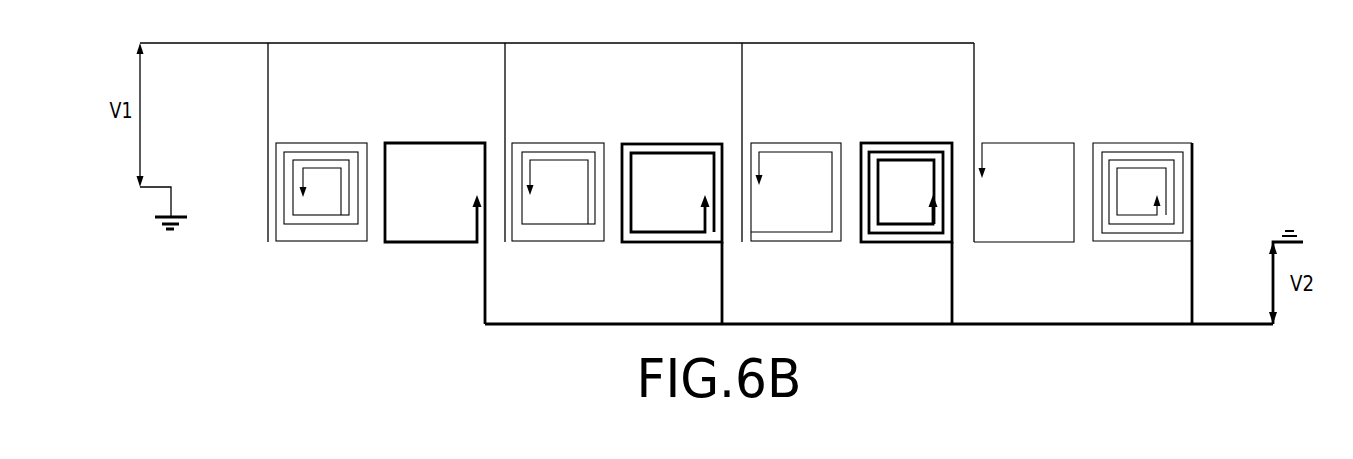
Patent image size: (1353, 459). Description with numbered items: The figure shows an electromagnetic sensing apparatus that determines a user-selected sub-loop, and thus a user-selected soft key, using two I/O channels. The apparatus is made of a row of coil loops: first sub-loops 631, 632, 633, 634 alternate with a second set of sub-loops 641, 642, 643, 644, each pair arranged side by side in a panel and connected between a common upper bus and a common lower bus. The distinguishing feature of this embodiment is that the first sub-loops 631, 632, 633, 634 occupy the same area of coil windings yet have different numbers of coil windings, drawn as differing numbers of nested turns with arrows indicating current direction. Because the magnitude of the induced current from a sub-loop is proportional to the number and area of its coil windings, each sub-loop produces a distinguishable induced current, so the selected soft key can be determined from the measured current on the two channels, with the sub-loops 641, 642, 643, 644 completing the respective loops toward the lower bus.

The first sub-loop 631 is at (320, 143).
The first sub-loop 632 is at (558, 143).
The first sub-loop 633 is at (795, 143).
The first sub-loop 634 is at (1028, 143).
The fifth coil 641 is at (435, 143).
The sixth coil 642 is at (672, 143).
The seventh coil 643 is at (908, 143).
The eighth coil 644 is at (1142, 143).